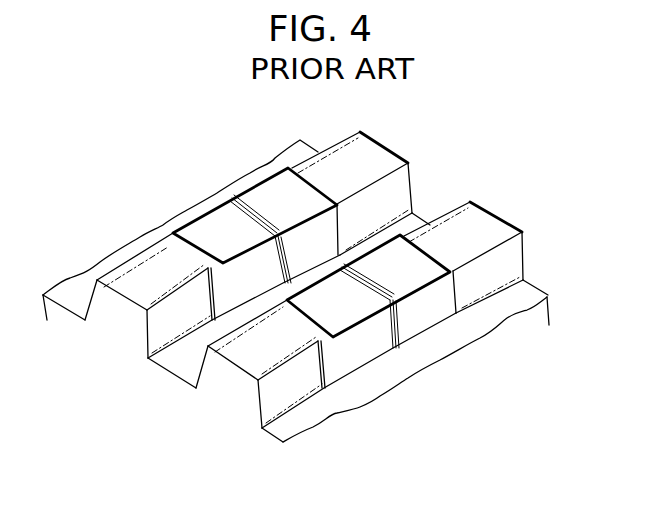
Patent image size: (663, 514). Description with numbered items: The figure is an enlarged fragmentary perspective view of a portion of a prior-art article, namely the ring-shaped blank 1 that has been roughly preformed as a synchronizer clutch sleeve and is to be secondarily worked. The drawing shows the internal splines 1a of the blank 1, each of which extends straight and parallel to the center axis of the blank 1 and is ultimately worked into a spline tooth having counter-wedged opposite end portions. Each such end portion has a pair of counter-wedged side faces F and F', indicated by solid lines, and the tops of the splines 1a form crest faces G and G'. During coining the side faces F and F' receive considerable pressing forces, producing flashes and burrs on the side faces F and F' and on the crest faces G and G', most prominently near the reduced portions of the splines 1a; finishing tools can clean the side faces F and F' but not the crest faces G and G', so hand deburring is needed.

The ring-shaped blank 1 is at (437, 364).
The internal spline 1a is at (233, 236).
The counter-wedged side face F is at (252, 338).
The crest face G is at (207, 318).
The counter-wedged side face F' is at (446, 238).
The crest face G' is at (407, 192).